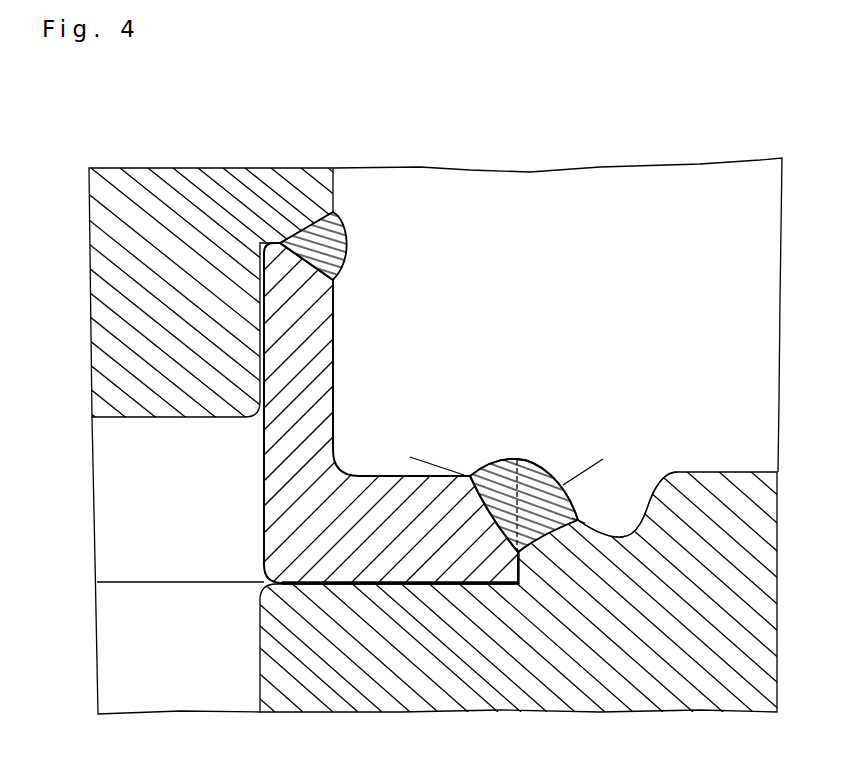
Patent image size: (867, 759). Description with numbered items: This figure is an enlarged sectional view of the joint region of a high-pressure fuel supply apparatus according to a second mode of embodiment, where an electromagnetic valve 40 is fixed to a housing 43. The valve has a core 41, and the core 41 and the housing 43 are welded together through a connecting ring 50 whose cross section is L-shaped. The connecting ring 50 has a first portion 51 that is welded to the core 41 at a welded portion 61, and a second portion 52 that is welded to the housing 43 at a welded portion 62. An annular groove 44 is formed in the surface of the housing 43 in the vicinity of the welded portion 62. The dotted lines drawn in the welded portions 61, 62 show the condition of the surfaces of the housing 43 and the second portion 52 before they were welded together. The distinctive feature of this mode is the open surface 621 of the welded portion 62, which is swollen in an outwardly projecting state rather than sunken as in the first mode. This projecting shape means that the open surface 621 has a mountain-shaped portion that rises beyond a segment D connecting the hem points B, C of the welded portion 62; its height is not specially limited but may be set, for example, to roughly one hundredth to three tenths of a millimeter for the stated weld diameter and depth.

The electromagnetic valve 40 is at (310, 169).
The core 41 is at (223, 192).
The housing 43 is at (771, 618).
The annular groove 44 is at (648, 500).
The connecting ring 50 is at (278, 497).
The first portion 51 is at (263, 429).
The second portion 52 is at (365, 543).
The welded portion 61 is at (347, 240).
The welded portion 62 is at (516, 459).
The open surface 621 is at (548, 465).
The hem point B is at (470, 477).
The hem point C is at (580, 520).
The segment D is at (592, 465).